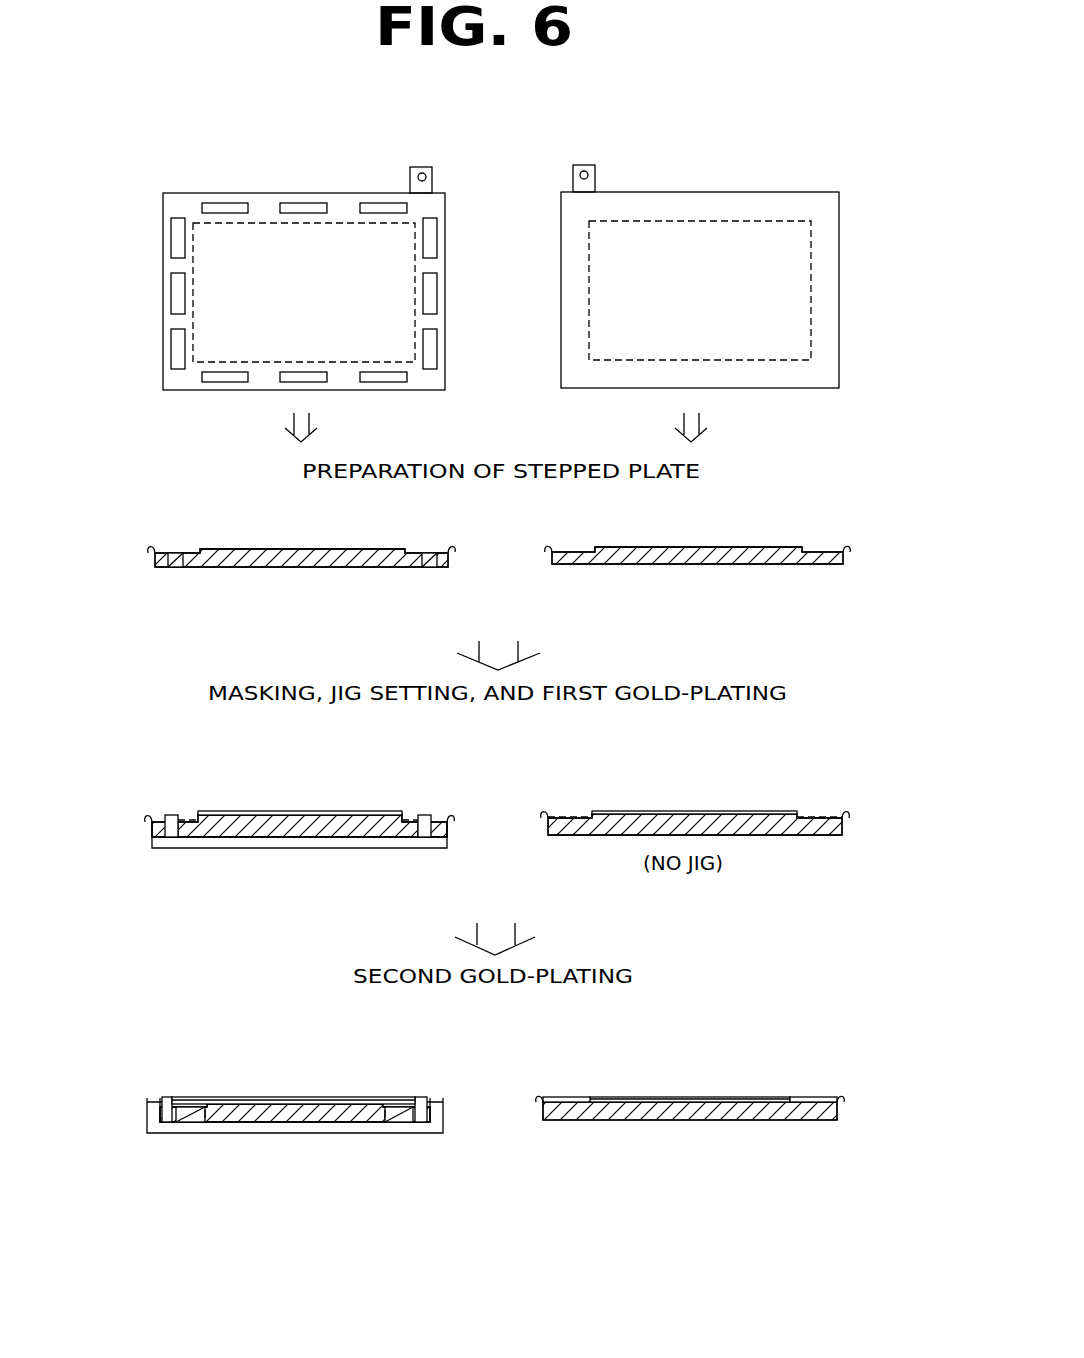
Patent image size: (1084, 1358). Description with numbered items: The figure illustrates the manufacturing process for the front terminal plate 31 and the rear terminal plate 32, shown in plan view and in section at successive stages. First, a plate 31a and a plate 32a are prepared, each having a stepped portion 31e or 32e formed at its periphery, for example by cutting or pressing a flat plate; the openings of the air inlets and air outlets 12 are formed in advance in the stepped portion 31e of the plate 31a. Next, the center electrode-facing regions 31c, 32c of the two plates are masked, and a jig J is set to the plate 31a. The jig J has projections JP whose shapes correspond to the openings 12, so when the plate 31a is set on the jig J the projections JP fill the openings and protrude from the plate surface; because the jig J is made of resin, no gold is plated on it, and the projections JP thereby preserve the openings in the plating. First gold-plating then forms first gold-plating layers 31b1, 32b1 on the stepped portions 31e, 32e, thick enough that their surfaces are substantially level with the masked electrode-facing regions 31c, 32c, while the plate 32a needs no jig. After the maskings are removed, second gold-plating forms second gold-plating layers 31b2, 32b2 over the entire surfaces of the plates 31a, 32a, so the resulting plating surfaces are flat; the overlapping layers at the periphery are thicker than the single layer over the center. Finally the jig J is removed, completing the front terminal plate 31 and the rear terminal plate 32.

The front terminal plate 31 is at (221, 193).
The plate 31a is at (393, 567).
The first gold-plating layer 31b1 is at (185, 818).
The second gold-plating layer 31b2 is at (250, 1097).
The electrode-facing region 31c is at (415, 223).
The stepped portion 31e is at (148, 553).
The rear terminal plate 32 is at (631, 193).
The plate 32a is at (797, 565).
The first gold-plating layer 32b1 is at (568, 818).
The second gold-plating layer 32b2 is at (670, 1097).
The electrode-facing region 32c is at (780, 221).
The stepped portion 32e is at (545, 552).
The air inlets and air outlets 12 is at (174, 567).
The jig J is at (300, 848).
The projections JP is at (168, 815).